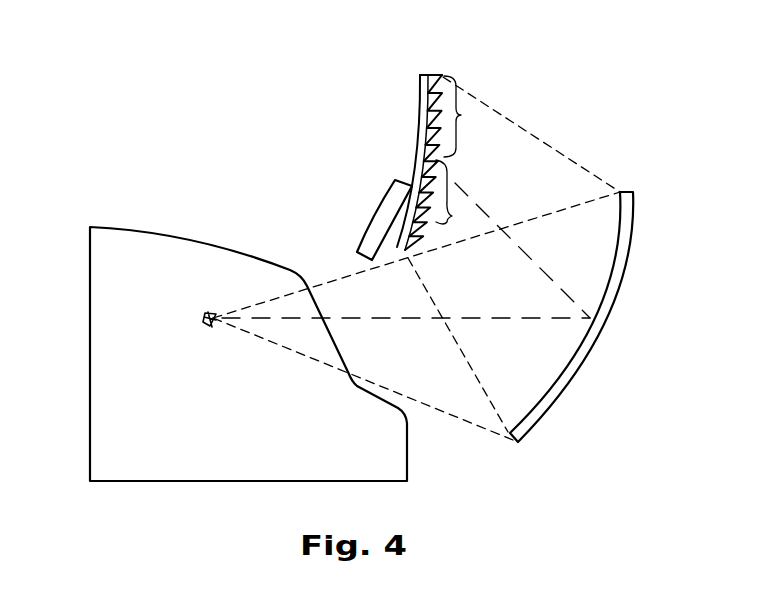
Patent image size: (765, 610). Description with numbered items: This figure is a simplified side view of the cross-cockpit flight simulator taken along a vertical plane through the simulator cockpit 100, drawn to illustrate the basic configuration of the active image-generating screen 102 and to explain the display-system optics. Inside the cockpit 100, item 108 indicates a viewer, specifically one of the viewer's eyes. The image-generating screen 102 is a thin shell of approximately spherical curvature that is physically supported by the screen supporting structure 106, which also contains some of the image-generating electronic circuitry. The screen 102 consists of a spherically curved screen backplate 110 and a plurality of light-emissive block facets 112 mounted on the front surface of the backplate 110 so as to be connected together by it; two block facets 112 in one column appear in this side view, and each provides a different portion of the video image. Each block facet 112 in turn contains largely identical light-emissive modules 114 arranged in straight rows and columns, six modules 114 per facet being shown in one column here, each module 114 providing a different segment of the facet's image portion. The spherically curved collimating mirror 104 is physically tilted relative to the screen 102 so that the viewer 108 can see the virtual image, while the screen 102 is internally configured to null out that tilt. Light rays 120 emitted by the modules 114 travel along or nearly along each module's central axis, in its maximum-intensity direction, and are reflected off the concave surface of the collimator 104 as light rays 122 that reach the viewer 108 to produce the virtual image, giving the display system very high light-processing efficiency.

The simulator cockpit 100 is at (108, 253).
The active image-generating screen 102 is at (420, 130).
The collimating mirror 104 is at (606, 302).
The screen supporting structure 106 is at (366, 226).
The viewer 108 is at (204, 320).
The screen backplate 110 is at (418, 165).
The light-emissive block facet 112 is at (452, 216).
The light-emissive module 114 is at (426, 78).
The light ray 120 is at (578, 163).
The reflected light ray 122 is at (570, 207).